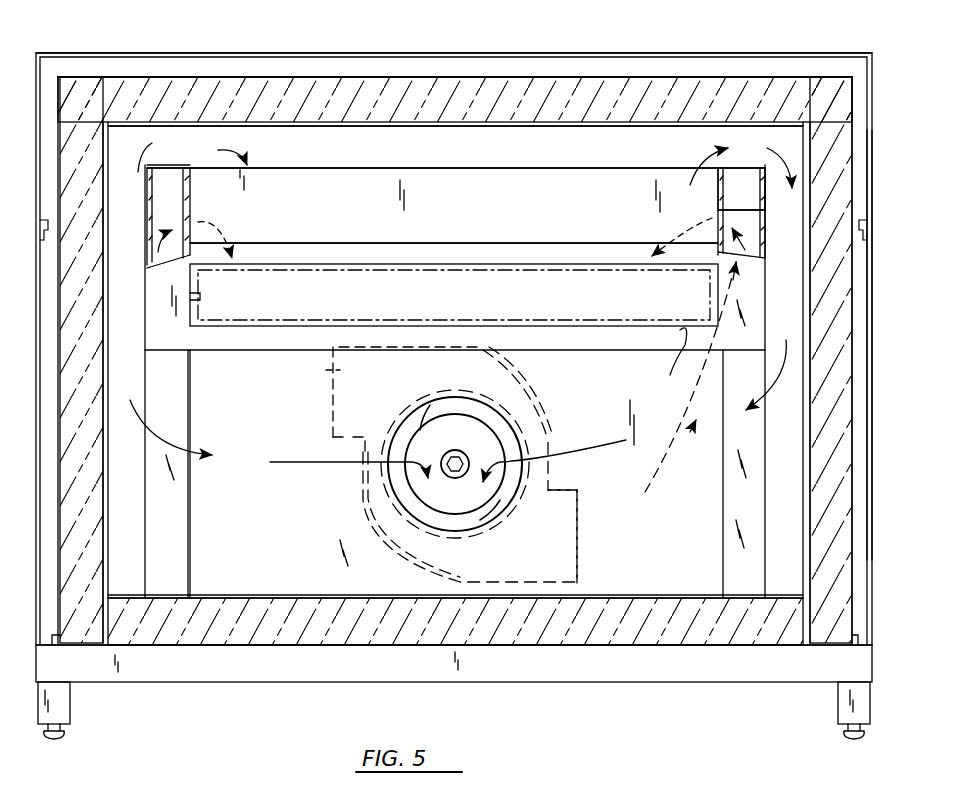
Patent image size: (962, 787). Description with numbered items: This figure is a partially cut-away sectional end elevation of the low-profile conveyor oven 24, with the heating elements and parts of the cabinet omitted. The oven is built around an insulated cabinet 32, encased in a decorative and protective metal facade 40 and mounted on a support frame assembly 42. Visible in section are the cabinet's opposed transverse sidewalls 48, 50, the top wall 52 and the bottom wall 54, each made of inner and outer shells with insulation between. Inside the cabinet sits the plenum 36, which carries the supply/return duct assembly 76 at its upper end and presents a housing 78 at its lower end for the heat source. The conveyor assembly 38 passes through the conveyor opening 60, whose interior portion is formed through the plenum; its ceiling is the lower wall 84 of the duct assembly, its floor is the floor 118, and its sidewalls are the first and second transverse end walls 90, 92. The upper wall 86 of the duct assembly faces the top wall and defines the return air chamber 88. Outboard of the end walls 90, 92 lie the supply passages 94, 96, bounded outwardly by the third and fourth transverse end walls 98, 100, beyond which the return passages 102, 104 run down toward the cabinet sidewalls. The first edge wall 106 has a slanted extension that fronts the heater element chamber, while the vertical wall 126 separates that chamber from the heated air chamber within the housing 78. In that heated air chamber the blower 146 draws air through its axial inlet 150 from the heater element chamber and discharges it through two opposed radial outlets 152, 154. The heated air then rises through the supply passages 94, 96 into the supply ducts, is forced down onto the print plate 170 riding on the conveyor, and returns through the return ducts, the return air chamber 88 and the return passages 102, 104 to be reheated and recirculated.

The low-profile conveyor oven 24 is at (818, 46).
The cabinet 32 is at (84, 74).
The plenum 36 is at (143, 502).
The conveyor assembly 38 is at (340, 263).
The metal facade 40 is at (870, 448).
The support frame assembly 42 is at (808, 663).
The transverse sidewall 48 is at (112, 538).
The transverse sidewall 50 is at (835, 533).
The top wall 52 is at (378, 125).
The bottom wall 54 is at (683, 598).
The conveyor opening 60 is at (190, 297).
The supply/return duct assembly 76 is at (477, 165).
The housing 78 is at (732, 568).
The lower wall 84 is at (494, 243).
The upper wall 86 is at (335, 166).
The return air chamber 88 is at (440, 152).
The first transverse end wall 90 is at (742, 210).
The second transverse end wall 92 is at (186, 176).
The supply passage 94 is at (730, 197).
The supply passage 96 is at (178, 212).
The third transverse end wall 98 is at (756, 246).
The fourth transverse end wall 100 is at (126, 196).
The return passage 102 is at (799, 308).
The return passage 104 is at (137, 400).
The first edge wall 106 is at (175, 332).
The floor 118 is at (667, 359).
The vertical wall 126 is at (648, 470).
The blower 146 is at (548, 388).
The axial inlet 150 is at (434, 498).
The radial outlet 152 is at (334, 378).
The radial outlet 154 is at (580, 554).
The print plate 170 is at (571, 266).